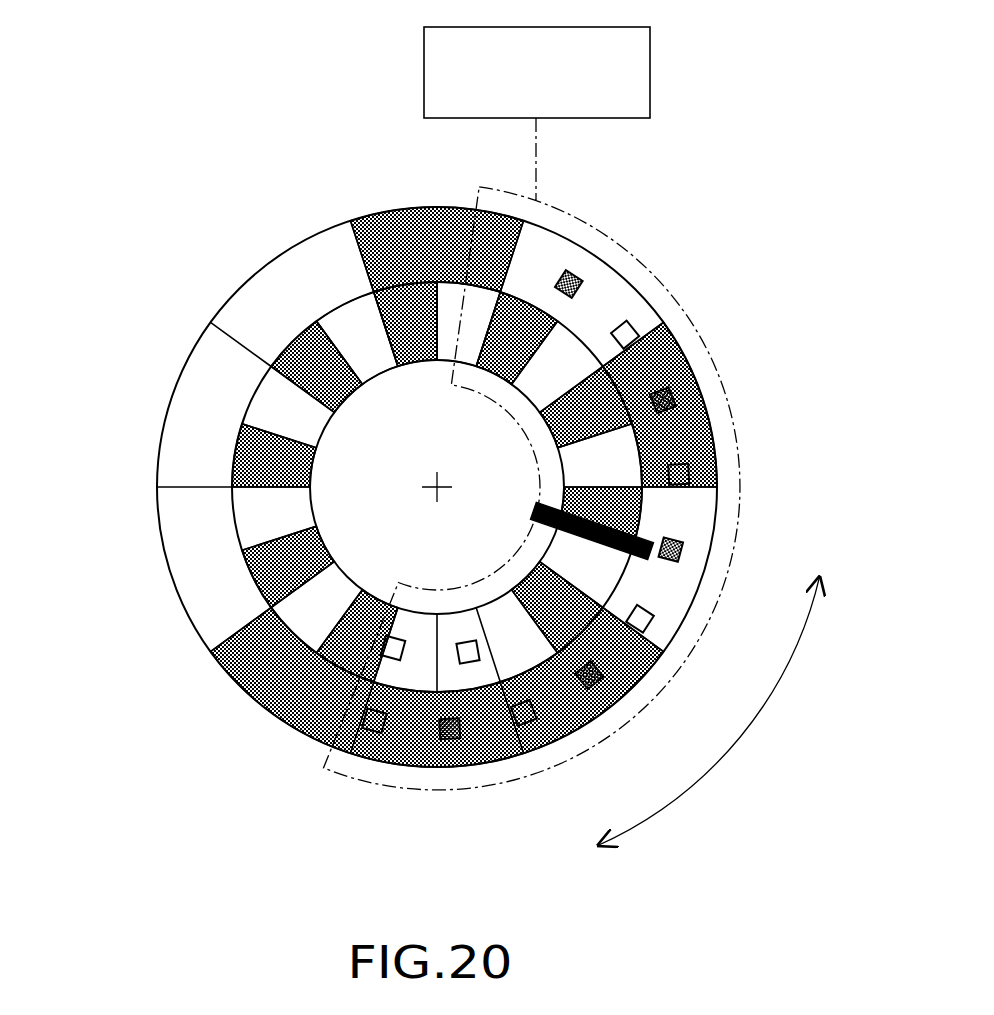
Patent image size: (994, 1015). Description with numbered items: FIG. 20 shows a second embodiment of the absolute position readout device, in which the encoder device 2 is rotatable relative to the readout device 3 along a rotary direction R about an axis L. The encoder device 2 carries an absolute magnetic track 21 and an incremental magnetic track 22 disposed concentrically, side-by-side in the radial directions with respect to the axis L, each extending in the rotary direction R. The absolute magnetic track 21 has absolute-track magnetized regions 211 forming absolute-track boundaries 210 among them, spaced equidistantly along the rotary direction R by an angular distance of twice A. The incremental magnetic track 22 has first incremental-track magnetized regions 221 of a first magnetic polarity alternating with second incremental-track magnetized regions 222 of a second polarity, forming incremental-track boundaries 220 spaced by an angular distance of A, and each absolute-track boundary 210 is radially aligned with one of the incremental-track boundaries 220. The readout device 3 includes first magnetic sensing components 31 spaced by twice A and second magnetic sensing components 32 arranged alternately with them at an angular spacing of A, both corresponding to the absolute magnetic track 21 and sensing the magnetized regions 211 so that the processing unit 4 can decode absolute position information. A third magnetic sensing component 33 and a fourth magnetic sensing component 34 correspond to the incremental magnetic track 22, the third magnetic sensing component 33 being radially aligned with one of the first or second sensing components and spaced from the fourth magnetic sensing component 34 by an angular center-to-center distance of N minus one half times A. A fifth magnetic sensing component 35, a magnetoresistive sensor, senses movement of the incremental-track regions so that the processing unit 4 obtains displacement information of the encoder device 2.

The encoder device 2 is at (167, 578).
The absolute magnetic track 21 is at (299, 250).
The absolute-track boundaries 210 is at (232, 632).
The absolute-track magnetized regions 211 is at (190, 610).
The incremental magnetic track 22 is at (273, 397).
The incremental-track boundaries 220 is at (267, 485).
The first incremental-track magnetized regions 221 is at (357, 328).
The second incremental-track magnetized regions 222 is at (412, 310).
The readout device 3 is at (657, 272).
The first magnetic sensing components 31 is at (650, 624).
The second magnetic sensing components 32 is at (682, 552).
The third magnetic sensing component 33 is at (395, 638).
The fourth magnetic sensing component 34 is at (467, 641).
The fifth magnetic sensing component 35 is at (572, 551).
The processing unit 4 is at (633, 47).
The axis L is at (436, 488).
The rotary direction R is at (708, 710).